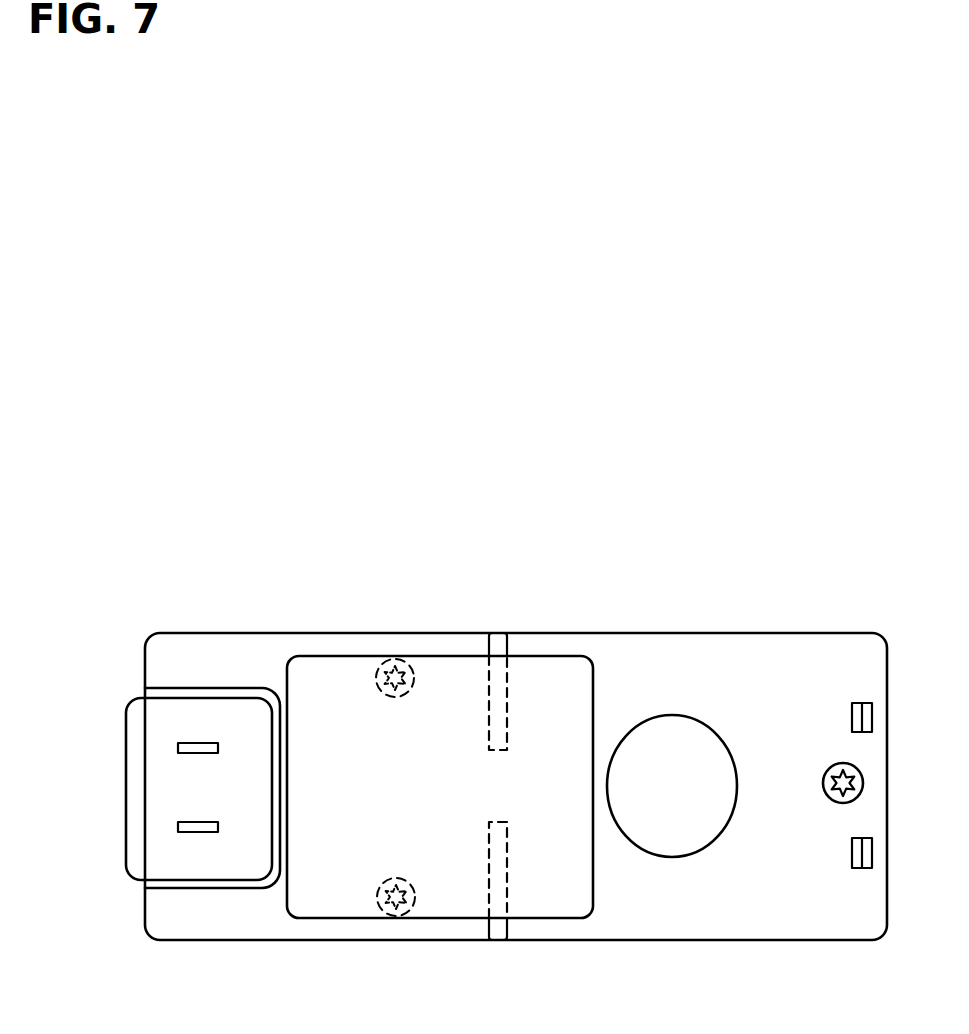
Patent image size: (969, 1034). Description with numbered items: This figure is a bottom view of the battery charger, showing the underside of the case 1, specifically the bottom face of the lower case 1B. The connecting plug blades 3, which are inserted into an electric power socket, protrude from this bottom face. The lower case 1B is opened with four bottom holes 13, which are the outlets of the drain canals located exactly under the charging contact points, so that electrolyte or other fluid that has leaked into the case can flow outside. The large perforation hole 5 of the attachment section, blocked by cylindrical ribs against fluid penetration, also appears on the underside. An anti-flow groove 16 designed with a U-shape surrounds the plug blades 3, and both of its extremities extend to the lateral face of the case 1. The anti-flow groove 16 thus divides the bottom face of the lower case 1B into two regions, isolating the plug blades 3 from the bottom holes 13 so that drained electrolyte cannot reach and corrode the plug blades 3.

The case 1 is at (405, 601).
The lower case 1B is at (623, 922).
The plug blades 3 is at (198, 832).
The perforation hole 5 is at (690, 850).
The bottom holes 13 is at (497, 705).
The anti-flow groove 16 is at (250, 885).